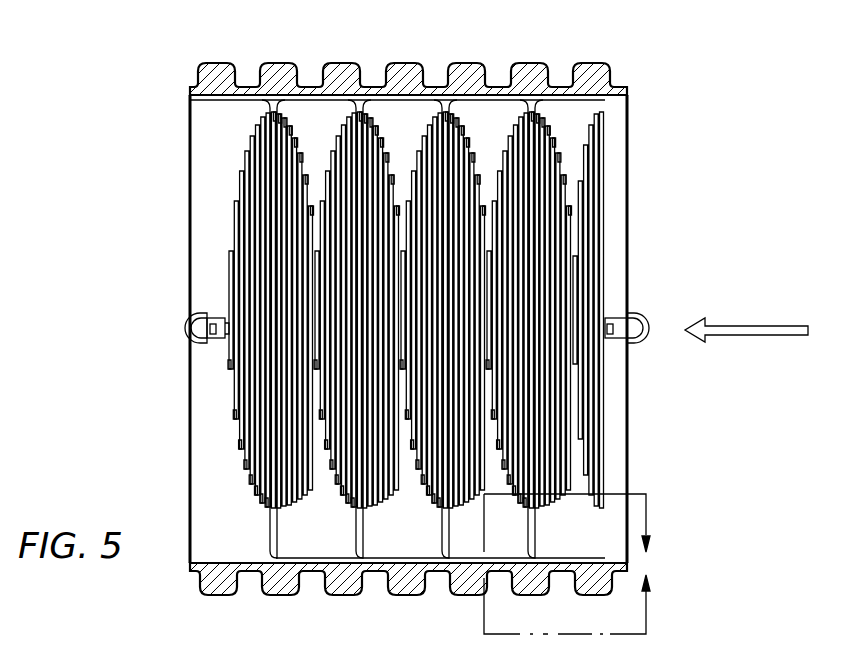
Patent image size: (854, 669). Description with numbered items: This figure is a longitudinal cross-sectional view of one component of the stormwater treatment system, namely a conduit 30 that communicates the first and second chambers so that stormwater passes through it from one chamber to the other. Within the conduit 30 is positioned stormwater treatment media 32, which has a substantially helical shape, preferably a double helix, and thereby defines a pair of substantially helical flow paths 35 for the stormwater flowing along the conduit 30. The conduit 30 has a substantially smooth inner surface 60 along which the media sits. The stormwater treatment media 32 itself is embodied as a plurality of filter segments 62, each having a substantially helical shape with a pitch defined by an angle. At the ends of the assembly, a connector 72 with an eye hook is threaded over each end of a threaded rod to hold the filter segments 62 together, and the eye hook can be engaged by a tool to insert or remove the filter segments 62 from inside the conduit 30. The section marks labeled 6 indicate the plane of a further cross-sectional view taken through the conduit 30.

The conduit 30 is at (278, 586).
The stormwater treatment media 32 is at (668, 130).
The helical flow paths 35 is at (400, 132).
The inner surface 60 is at (248, 558).
The filter segments 62 is at (727, 130).
The connector 72 is at (190, 328).
The section line 6- 6 is at (577, 564).